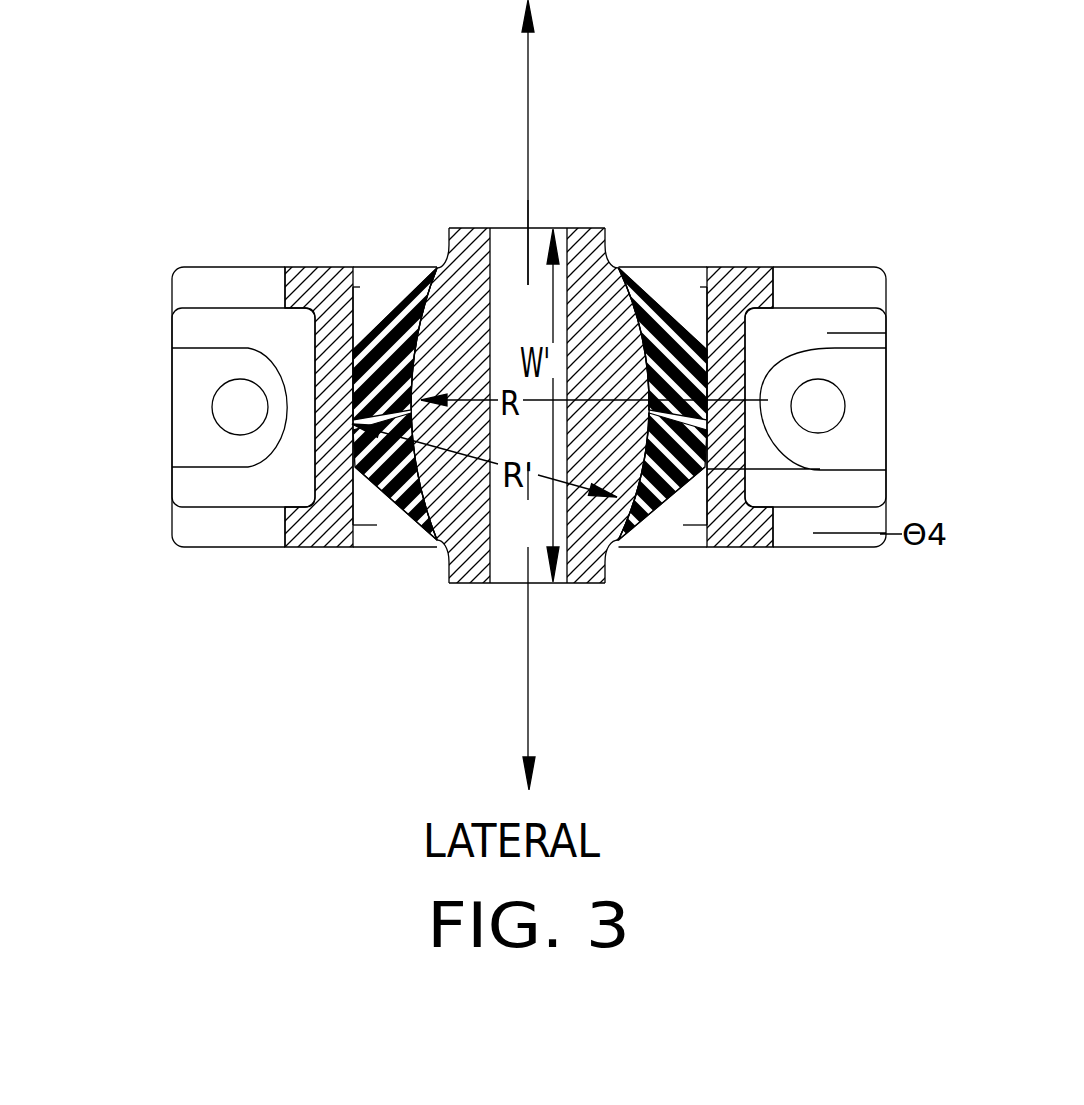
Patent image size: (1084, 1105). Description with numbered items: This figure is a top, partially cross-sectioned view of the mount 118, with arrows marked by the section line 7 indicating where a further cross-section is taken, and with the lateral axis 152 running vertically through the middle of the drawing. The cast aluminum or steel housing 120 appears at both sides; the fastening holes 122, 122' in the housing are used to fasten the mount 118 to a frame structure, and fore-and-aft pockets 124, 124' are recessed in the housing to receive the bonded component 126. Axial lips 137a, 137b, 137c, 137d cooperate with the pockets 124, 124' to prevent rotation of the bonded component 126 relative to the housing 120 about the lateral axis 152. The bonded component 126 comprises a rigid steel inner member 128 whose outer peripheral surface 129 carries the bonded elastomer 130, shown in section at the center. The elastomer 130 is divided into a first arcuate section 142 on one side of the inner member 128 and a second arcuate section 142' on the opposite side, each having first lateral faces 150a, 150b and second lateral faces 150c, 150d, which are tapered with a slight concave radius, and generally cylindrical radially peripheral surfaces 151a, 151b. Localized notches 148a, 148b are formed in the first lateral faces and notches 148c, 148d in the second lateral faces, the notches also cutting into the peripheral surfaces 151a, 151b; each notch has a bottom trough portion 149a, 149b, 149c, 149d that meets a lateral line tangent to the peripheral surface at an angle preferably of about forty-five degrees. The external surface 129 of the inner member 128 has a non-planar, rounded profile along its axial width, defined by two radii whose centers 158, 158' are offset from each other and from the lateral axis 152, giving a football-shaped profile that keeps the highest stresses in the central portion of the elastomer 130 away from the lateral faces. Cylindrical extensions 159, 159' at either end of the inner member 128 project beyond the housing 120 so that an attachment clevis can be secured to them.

The section line 7- 7 is at (528, 57).
The mount 118 is at (745, 133).
The housing 120 is at (322, 240).
The hole 122 is at (205, 498).
The hole 122' is at (878, 422).
The pocket 124 is at (328, 438).
The pocket 124' is at (798, 438).
The bonded component 126 is at (484, 612).
The inner member 128 is at (585, 232).
The outer peripheral surface 129 is at (767, 305).
The elastomer 130 is at (322, 420).
The axial lip 137a is at (705, 540).
The axial lip 137b is at (350, 548).
The axial lip 137c is at (740, 285).
The axial lip 137d is at (356, 284).
The first arcuate section 142 is at (830, 485).
The second arcuate section 142' is at (219, 304).
The notch 148a is at (658, 505).
The notch 148b is at (387, 510).
The notch 148c is at (697, 286).
The notch 148d is at (396, 302).
The bottom trough portion 149a is at (706, 505).
The bottom trough portion 149b is at (368, 473).
The bottom trough portion 149c is at (700, 307).
The bottom trough portion 149d is at (424, 268).
The first lateral face 150a is at (641, 525).
The first lateral face 150b is at (436, 535).
The second lateral face 150c is at (672, 290).
The second lateral face 150d is at (408, 255).
The radially peripheral surface 151a is at (708, 470).
The radially peripheral surface 151b is at (358, 412).
The lateral axis 152 is at (530, 214).
The center of radius 158 is at (828, 406).
The center of radius 158' is at (225, 406).
The cylindrical extension 159 is at (646, 373).
The cylindrical extension 159' is at (518, 435).